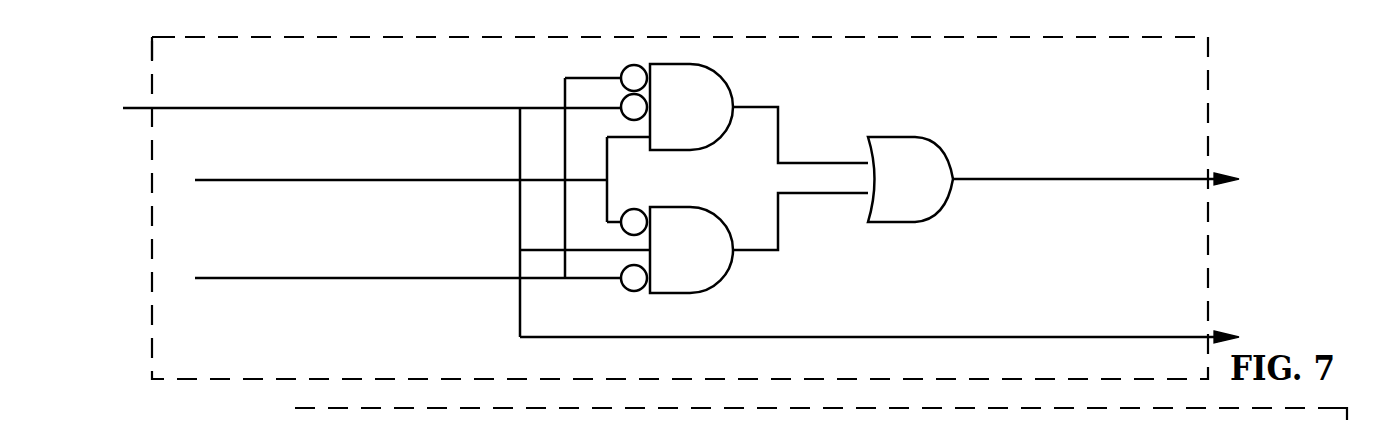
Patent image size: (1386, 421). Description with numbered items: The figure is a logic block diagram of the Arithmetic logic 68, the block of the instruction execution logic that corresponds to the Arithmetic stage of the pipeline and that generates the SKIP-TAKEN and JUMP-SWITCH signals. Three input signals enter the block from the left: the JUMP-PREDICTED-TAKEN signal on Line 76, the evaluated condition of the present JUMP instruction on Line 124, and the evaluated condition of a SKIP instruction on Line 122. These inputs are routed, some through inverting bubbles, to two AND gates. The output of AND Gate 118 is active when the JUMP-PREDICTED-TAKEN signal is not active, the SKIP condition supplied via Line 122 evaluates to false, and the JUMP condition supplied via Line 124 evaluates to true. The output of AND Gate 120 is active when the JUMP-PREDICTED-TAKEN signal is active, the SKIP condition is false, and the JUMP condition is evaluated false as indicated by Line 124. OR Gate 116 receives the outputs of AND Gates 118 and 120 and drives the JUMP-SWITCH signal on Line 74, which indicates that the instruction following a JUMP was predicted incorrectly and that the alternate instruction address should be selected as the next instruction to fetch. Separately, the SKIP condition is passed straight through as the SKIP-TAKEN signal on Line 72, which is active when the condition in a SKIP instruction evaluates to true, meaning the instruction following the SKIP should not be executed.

The Arithmetic logic 68 is at (152, 80).
The JUMP-PREDICTED-TAKEN signal line 76 is at (462, 110).
The JUMP condition true line 124 is at (466, 182).
The SKIP condition true line 122 is at (466, 281).
The AND gate 118 is at (690, 64).
The AND gate 120 is at (690, 207).
The OR gate 116 is at (897, 137).
The JUMP-SWITCH signal line 74 is at (1062, 181).
The SKIP-TAKEN signal line 72 is at (918, 336).